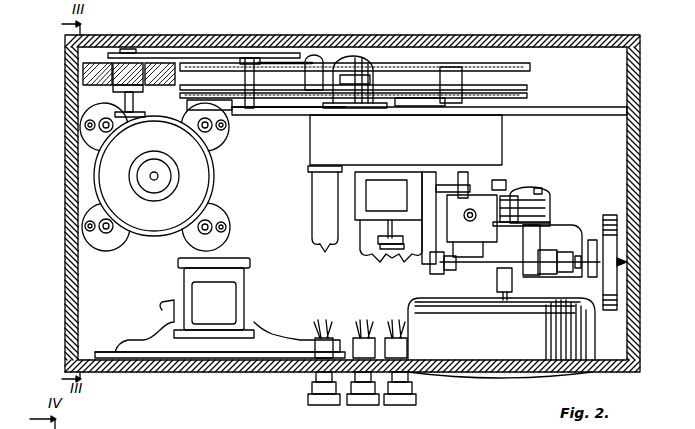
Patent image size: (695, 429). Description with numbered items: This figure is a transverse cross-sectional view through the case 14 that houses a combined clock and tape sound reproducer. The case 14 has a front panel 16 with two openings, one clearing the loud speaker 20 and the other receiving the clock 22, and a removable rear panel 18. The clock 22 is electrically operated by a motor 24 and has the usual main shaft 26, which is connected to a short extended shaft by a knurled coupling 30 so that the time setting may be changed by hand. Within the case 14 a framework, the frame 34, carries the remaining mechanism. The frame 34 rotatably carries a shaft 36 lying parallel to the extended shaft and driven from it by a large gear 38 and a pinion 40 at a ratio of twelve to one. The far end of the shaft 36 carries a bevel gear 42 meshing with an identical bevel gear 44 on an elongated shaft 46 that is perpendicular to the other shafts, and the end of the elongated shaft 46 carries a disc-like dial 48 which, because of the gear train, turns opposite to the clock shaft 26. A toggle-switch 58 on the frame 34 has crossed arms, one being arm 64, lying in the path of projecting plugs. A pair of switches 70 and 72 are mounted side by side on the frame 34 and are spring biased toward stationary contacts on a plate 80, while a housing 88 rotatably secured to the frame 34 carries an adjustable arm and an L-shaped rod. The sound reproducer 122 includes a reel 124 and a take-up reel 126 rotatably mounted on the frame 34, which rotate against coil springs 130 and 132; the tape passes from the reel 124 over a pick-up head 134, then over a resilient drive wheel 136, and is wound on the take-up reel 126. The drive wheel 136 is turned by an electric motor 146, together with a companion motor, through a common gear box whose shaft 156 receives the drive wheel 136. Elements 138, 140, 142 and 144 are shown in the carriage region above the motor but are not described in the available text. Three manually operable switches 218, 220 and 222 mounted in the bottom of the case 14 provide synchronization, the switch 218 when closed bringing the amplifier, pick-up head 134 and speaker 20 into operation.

The case 14 is at (352, 190).
The front panel 16 is at (265, 372).
The removable rear panel 18 is at (582, 35).
The loud speaker 20 is at (250, 333).
The clock 22 is at (480, 344).
The motor 24 is at (522, 194).
The main shaft 26 is at (504, 302).
The knurled coupling 30 is at (497, 282).
The frame 34 is at (520, 251).
The shaft 36 is at (445, 270).
The large gear 38 is at (452, 180).
The pinion 40 is at (504, 178).
The bevel gear 42 is at (418, 252).
The bevel gear 44 is at (420, 262).
The elongated shaft 46 is at (627, 262).
The disc-like dial 48 is at (617, 265).
The toggle-switch 58 is at (565, 274).
The crossed arm 64 is at (592, 240).
The switch 70 is at (510, 235).
The switch 72 is at (495, 210).
The plate 80 is at (546, 206).
The housing 88 is at (546, 192).
The sound reproducer 122 is at (406, 140).
The reel 124 is at (525, 67).
The take-up reel 126 is at (308, 56).
The coil spring 130 is at (527, 92).
The coil spring 132 is at (302, 112).
The pick-up head 134 is at (358, 105).
The drive wheel 136 is at (85, 78).
The post 138 is at (250, 57).
The shaft 140 is at (258, 60).
The bracket 142 is at (140, 55).
The slide block 144 is at (358, 58).
The electric motor 146 is at (210, 165).
The shaft 156 is at (134, 100).
The manually operable switch 218 is at (316, 371).
The manually operable switch 220 is at (362, 405).
The manually operable switch 222 is at (405, 405).